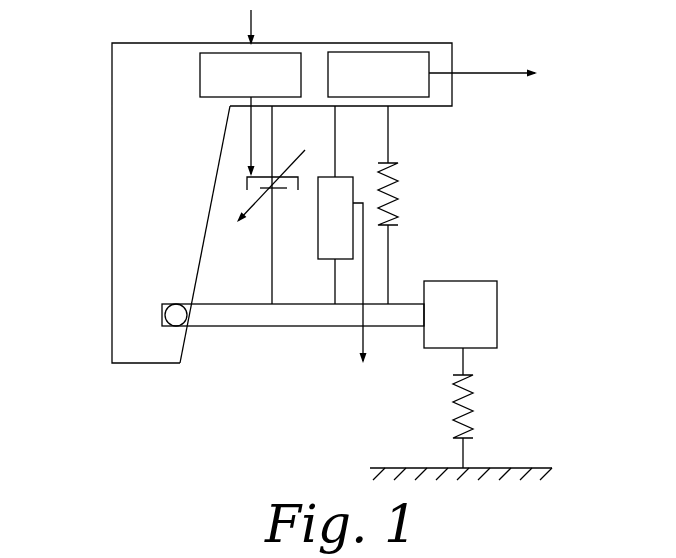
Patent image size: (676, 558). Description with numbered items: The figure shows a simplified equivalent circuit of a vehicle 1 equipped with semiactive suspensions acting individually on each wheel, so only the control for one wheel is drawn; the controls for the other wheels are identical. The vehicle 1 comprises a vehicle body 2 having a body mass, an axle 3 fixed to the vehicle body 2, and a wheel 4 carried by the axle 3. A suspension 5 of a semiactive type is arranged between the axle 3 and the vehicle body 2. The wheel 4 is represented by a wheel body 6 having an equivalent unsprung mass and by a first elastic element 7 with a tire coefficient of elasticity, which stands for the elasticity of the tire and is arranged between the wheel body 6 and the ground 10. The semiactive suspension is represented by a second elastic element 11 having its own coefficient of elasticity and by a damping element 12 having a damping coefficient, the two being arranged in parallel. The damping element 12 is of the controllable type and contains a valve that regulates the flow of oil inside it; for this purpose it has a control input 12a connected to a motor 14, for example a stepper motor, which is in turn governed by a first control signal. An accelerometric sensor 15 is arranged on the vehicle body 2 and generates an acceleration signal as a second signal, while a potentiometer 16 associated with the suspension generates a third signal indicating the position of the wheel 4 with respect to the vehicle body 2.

The vehicle 1 is at (185, 395).
The vehicle body 2 is at (125, 72).
The axle 3 is at (300, 312).
The wheel 4 is at (528, 268).
The suspension 5 is at (420, 180).
The wheel body 6 is at (483, 338).
The first elastic element 7 is at (455, 405).
The ground 10 is at (509, 468).
The second elastic element 11 is at (395, 223).
The damping element 12 is at (279, 177).
The control input 12a is at (222, 145).
The motor 14 is at (200, 73).
The accelerometric sensor 15 is at (408, 88).
The potentiometer 16 is at (344, 182).